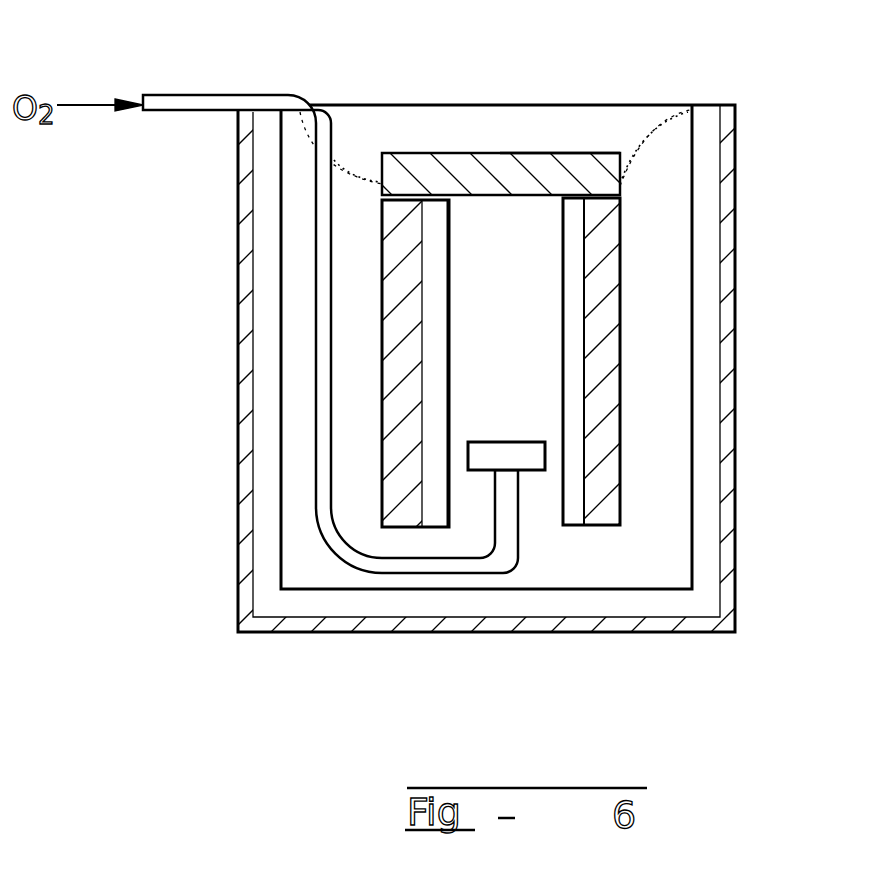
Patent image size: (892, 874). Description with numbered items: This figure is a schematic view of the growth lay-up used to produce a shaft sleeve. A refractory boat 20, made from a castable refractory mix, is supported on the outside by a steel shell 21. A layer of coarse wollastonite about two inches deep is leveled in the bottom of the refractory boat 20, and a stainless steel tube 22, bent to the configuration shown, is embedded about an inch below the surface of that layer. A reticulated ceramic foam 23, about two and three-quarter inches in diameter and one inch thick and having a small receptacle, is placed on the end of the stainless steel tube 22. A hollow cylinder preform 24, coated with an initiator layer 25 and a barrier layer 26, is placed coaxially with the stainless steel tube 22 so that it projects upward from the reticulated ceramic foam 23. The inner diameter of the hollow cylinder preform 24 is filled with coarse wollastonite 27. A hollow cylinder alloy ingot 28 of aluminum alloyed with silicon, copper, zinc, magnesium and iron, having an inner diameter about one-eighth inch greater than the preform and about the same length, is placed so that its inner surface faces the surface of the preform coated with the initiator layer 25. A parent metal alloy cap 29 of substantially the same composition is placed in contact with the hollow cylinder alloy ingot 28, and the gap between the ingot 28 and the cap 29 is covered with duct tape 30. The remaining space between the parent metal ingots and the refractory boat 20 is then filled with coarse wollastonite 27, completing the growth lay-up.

The refractory boat 20 is at (703, 202).
The steel shell 21 is at (733, 285).
The stainless steel tube 22 is at (390, 577).
The reticulated ceramic foam 23 is at (530, 458).
The hollow cylinder preform 24 is at (433, 213).
The initiator layer 25 is at (417, 163).
The barrier layer 26 is at (447, 192).
The coarse wollastonite 27 is at (518, 318).
The hollow cylinder alloy ingot 28 is at (603, 432).
The parent metal alloy cap 29 is at (578, 162).
The duct tape 30 is at (377, 182).